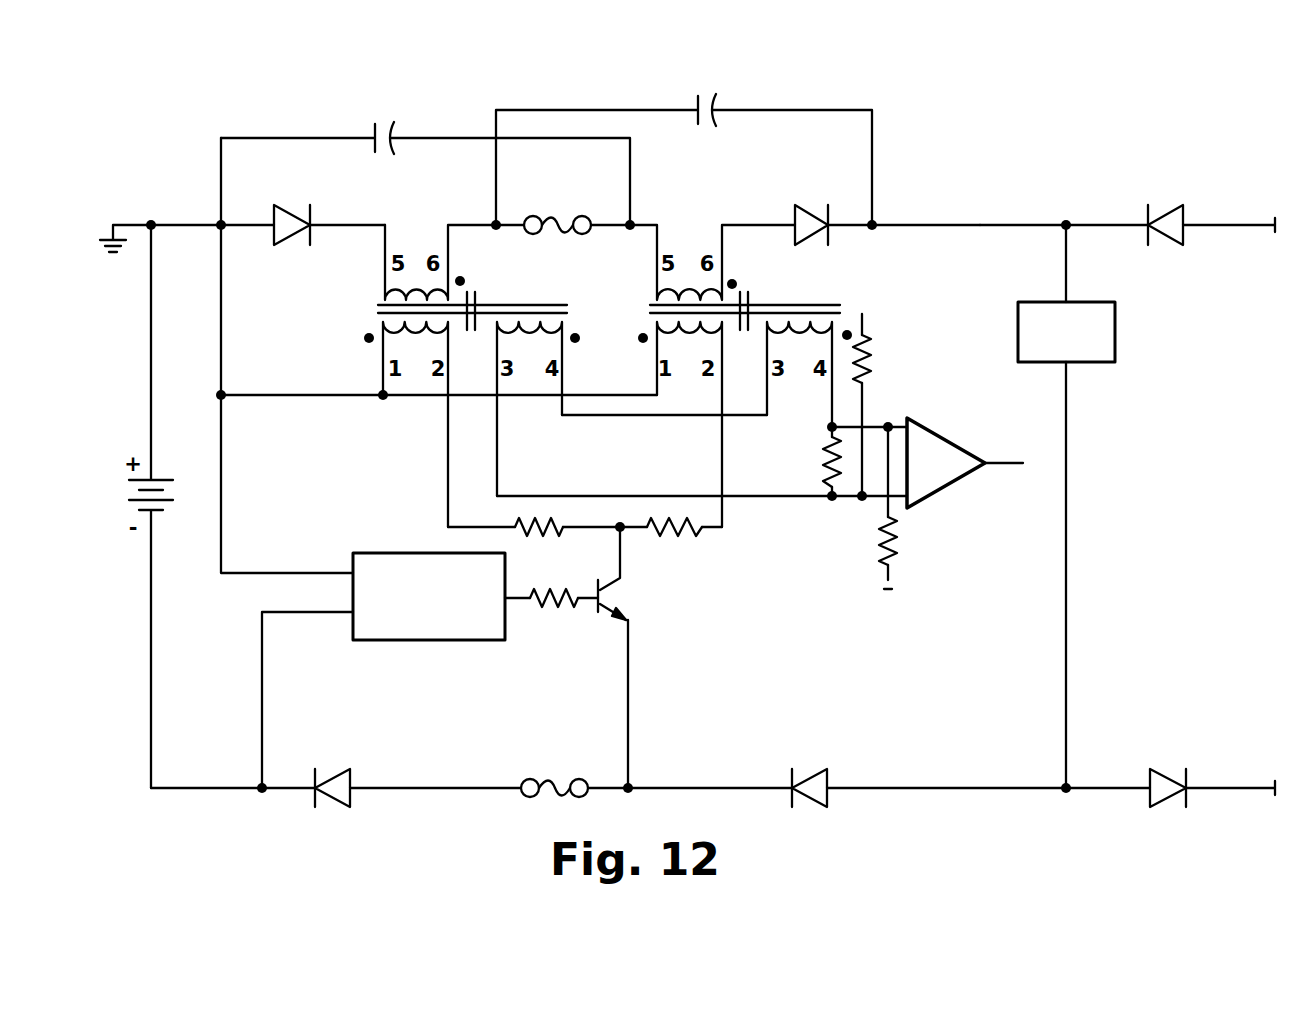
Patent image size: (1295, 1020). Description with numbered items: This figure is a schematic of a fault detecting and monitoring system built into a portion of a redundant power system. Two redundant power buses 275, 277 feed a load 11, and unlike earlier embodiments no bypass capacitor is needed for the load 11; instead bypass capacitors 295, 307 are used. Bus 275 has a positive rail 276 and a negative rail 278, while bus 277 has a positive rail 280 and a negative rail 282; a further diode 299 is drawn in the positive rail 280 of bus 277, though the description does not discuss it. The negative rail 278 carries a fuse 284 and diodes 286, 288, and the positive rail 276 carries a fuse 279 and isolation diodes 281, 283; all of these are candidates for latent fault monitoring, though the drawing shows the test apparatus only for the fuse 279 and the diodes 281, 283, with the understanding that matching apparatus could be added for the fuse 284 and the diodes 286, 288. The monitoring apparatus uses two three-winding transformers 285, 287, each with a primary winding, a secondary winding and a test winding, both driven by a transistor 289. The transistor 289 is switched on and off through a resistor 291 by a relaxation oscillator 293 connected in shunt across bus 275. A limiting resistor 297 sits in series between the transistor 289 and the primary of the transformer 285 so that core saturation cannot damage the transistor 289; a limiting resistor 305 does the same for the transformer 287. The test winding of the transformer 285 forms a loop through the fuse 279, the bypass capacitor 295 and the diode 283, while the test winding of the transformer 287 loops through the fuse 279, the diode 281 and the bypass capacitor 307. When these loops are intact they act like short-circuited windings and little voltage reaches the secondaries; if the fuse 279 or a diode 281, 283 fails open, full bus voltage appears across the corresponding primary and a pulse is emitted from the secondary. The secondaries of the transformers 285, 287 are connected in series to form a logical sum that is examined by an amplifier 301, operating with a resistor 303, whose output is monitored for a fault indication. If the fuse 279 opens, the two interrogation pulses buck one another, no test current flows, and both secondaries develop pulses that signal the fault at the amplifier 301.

The load 11 is at (1092, 302).
The power bus 275 is at (943, 225).
The positive rail 276 is at (180, 225).
The power bus 277 is at (1018, 225).
The negative rail 278 is at (208, 788).
The fuse 279 is at (553, 224).
The positive rail 280 is at (1246, 232).
The isolation diode 281 is at (797, 216).
The negative rail 282 is at (1205, 786).
The isolation diode 283 is at (290, 222).
The fuse 284 is at (547, 786).
The transformer 285 is at (525, 305).
The diode 286 is at (810, 770).
The transformer 287 is at (785, 305).
The diode 288 is at (340, 775).
The transistor 289 is at (622, 583).
The resistor 291 is at (555, 607).
The relaxation oscillator 293 is at (372, 642).
The bypass capacitor 295 is at (389, 135).
The limiting resistor 297 is at (523, 532).
The diode 299 is at (1173, 210).
The amplifier 301 is at (942, 434).
The resistor 303 is at (832, 500).
The limiting resistor 305 is at (677, 532).
The bypass capacitor 307 is at (714, 112).